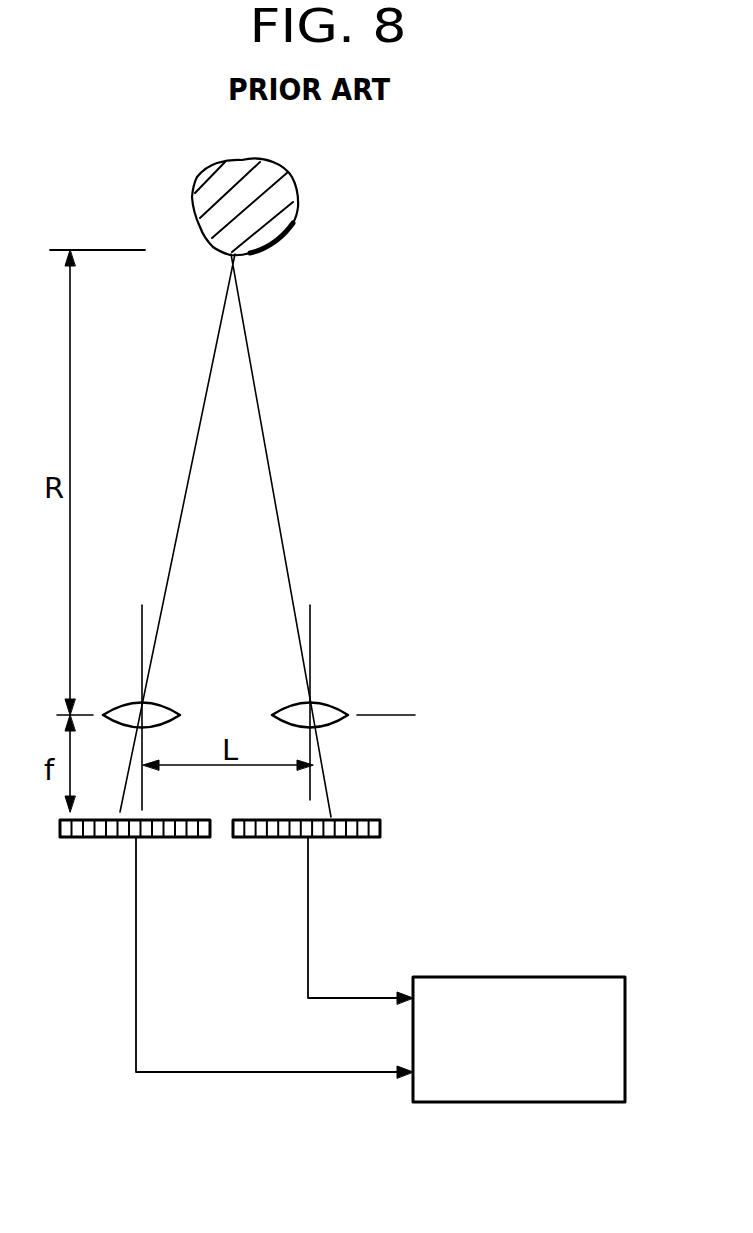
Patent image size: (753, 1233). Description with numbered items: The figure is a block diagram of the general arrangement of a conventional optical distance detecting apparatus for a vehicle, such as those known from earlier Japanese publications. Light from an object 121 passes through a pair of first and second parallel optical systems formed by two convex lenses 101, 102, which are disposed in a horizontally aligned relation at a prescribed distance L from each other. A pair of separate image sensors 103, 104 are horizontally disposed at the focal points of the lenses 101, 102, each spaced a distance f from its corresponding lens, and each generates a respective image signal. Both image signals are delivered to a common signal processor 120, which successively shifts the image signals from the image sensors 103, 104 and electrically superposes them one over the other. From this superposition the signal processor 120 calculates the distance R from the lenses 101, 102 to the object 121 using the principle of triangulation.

The object 121 is at (297, 218).
The convex lens 101 is at (172, 708).
The convex lens 102 is at (337, 708).
The image sensor 103 is at (92, 838).
The image sensor 104 is at (373, 838).
The signal processor 120 is at (572, 977).